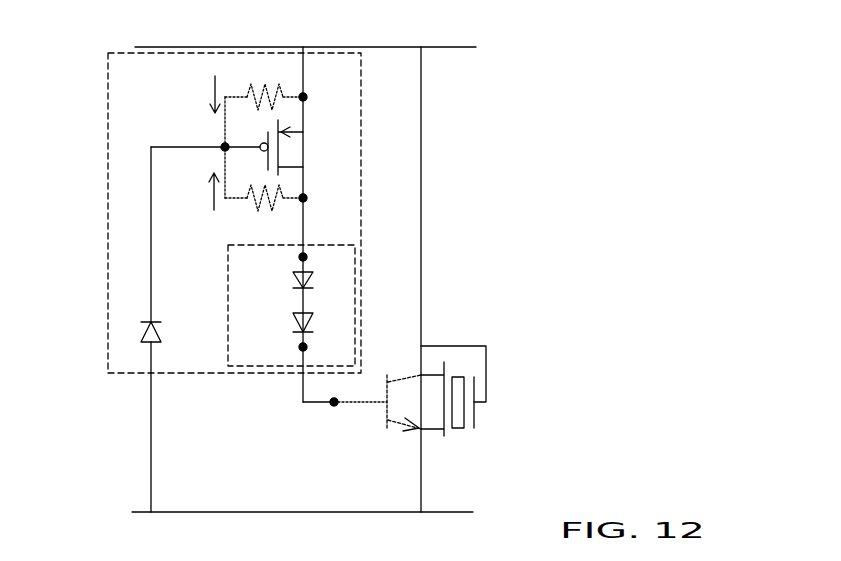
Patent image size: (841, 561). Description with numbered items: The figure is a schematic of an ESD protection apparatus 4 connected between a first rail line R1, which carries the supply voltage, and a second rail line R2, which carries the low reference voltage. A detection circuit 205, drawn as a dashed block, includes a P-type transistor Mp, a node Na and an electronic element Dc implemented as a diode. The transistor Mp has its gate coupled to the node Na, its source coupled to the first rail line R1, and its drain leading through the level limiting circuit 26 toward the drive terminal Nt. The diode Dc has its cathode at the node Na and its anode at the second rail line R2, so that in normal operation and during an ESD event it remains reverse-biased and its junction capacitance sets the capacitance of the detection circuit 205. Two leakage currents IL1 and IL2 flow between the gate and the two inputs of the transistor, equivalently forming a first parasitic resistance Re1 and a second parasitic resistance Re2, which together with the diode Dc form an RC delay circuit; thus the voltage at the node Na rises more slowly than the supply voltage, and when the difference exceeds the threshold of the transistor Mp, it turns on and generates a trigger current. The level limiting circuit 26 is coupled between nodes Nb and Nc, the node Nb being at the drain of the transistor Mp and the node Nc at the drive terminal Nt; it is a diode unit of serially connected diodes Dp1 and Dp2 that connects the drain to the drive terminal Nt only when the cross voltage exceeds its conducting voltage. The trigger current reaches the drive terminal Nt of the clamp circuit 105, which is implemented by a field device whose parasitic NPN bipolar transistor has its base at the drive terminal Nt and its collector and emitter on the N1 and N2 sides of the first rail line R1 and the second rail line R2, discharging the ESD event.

The semiconductor device circuit 4 is at (663, 31).
The clamp circuit 105 is at (514, 374).
The detection circuit 205 is at (197, 373).
The level limiting circuit 26 is at (256, 366).
The first rail line R1 is at (143, 47).
The second rail line R2 is at (140, 512).
The first node N1 is at (440, 211).
The second node N2 is at (439, 470).
The first parasitic resistance Re1 is at (266, 83).
The second parasitic resistance Re2 is at (266, 214).
The leakage current IL1 is at (196, 94).
The leakage current IL2 is at (194, 193).
The node Na is at (222, 150).
The transistor Mp is at (291, 147).
The electronic element Dc is at (138, 329).
The node Nb is at (307, 258).
The node Nc is at (307, 348).
The first diode Dp1 is at (276, 284).
The second diode Dp2 is at (276, 324).
The drive terminal Nt is at (336, 405).